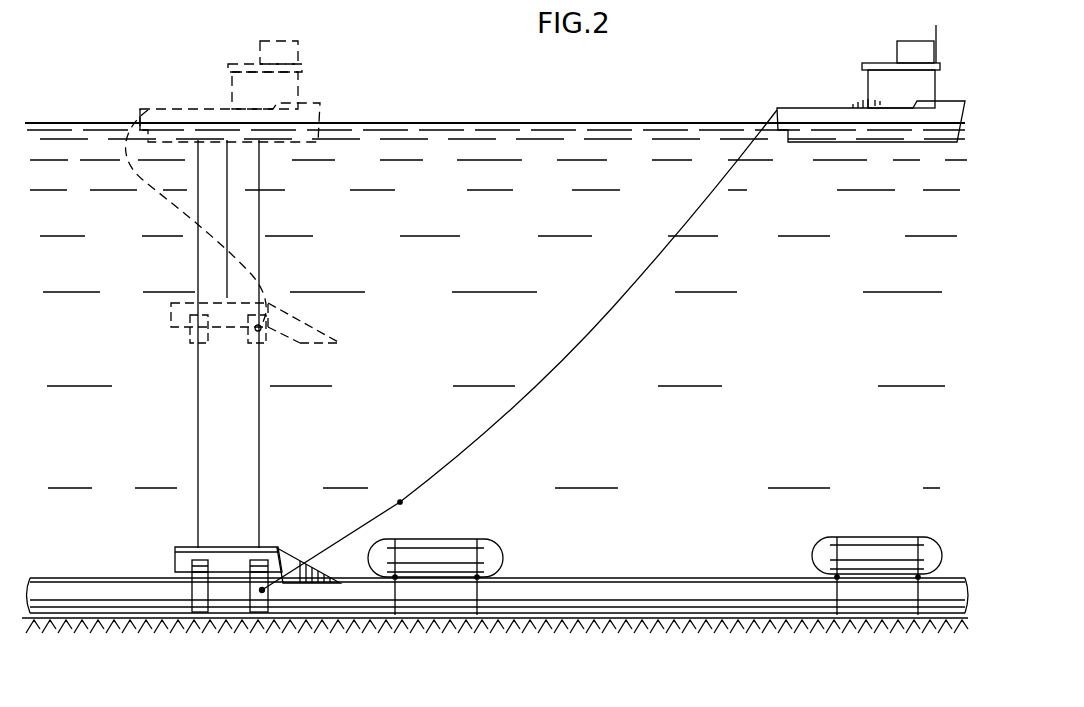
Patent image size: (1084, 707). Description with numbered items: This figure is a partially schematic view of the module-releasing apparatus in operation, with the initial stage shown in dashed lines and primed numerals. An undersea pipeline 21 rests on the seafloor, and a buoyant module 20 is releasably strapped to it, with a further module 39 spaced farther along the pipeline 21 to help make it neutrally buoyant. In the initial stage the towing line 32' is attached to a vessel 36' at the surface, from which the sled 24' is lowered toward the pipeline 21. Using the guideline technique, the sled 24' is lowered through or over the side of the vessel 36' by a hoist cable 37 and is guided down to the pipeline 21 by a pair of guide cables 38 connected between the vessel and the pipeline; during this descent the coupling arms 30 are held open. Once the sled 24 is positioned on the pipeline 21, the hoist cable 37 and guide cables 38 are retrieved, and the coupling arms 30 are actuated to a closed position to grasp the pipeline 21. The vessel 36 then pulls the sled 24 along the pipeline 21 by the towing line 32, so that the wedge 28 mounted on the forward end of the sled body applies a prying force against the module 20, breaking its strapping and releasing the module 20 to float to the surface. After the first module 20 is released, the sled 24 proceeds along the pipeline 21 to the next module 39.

The buoyant module 20 is at (462, 540).
The undersea pipeline 21 is at (657, 577).
The sled assembly 24 is at (228, 534).
The sled assembly (initial position) 24' is at (255, 346).
The wedge 28 is at (297, 558).
The coupling arms 30 is at (250, 600).
The towing line 32 is at (519, 351).
The towing line (initial position) 32' is at (189, 218).
The vessel 36 is at (871, 83).
The vessel (initial position) 36' is at (259, 91).
The hoist cable 37 is at (228, 215).
The guide cables 38 is at (262, 442).
The next module 39 is at (875, 537).